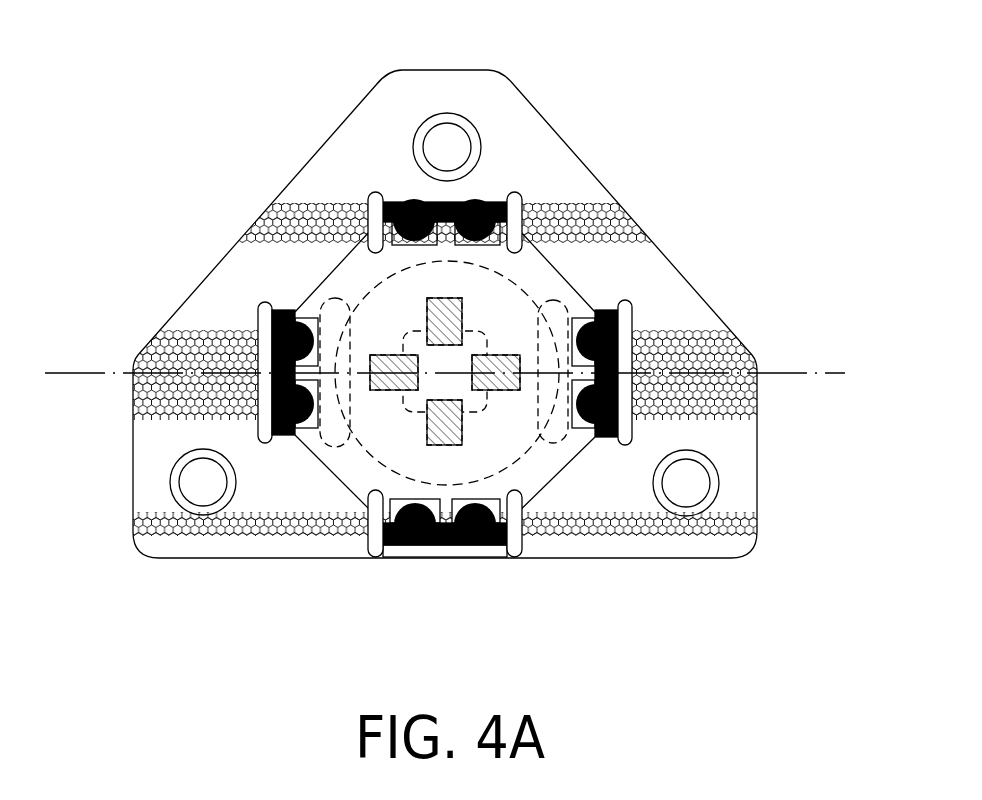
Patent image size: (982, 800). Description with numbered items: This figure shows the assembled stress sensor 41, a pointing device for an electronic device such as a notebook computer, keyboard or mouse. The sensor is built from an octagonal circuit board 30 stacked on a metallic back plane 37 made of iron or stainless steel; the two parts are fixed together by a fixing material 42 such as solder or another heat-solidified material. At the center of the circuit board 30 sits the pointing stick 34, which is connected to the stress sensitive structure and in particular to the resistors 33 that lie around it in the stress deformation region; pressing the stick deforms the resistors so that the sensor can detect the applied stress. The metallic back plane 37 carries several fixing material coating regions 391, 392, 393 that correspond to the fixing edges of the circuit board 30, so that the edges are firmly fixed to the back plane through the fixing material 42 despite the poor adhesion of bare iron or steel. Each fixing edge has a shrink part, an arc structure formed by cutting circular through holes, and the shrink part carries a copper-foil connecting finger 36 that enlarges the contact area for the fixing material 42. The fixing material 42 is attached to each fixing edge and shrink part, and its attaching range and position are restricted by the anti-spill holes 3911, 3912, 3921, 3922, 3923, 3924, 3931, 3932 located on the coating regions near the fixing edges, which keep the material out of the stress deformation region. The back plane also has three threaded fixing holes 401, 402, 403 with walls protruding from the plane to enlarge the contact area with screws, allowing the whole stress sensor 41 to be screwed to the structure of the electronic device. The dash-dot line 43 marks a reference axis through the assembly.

The stress sensor 41 is at (178, 132).
The fixing hole 401 is at (447, 112).
The fixing hole 402 is at (168, 482).
The fixing hole 403 is at (722, 482).
The circuit board 30 is at (320, 287).
The resistors 33 is at (509, 378).
The pointing stick 34 is at (475, 413).
The connecting finger 36 is at (520, 203).
The metallic back plane 37 is at (190, 558).
The fixing material coating region 391 is at (623, 213).
The fixing material coating region 392 is at (722, 355).
The fixing material coating region 393 is at (748, 518).
The anti-spill hole 3911 is at (513, 193).
The anti-spill hole 3912 is at (373, 193).
The anti-spill hole 3921 is at (625, 303).
The anti-spill hole 3922 is at (568, 440).
The anti-spill hole 3923 is at (265, 305).
The anti-spill hole 3924 is at (323, 438).
The anti-spill hole 3931 is at (515, 532).
The anti-spill hole 3932 is at (373, 533).
The fixing material 42 is at (607, 303).
The central axis 43 is at (838, 372).